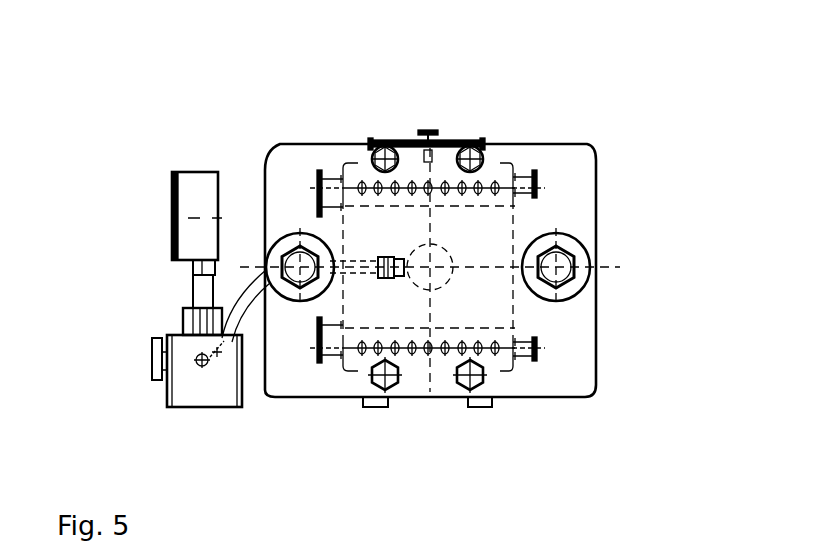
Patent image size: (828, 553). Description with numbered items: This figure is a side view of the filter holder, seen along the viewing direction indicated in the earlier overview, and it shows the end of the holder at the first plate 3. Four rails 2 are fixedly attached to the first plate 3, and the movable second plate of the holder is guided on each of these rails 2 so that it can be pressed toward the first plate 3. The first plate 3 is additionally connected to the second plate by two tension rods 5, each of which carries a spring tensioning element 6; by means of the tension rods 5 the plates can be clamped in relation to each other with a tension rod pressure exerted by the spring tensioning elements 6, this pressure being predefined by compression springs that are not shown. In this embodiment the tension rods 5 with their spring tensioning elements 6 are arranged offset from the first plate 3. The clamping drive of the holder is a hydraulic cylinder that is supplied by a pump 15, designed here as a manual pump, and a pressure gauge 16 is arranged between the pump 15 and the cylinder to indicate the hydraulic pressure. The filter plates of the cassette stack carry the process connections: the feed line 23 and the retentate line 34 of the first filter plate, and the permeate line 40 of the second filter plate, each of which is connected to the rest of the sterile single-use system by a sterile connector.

The rails 2 is at (381, 147).
The first plate 3 is at (578, 158).
The tension rods 5 is at (296, 255).
The spring tensioning elements 6 is at (295, 245).
The pump 15 is at (190, 382).
The pressure gauge 16 is at (190, 200).
The feed line 23 is at (333, 350).
The retentate line 34 is at (326, 178).
The permeate line 40 is at (536, 172).